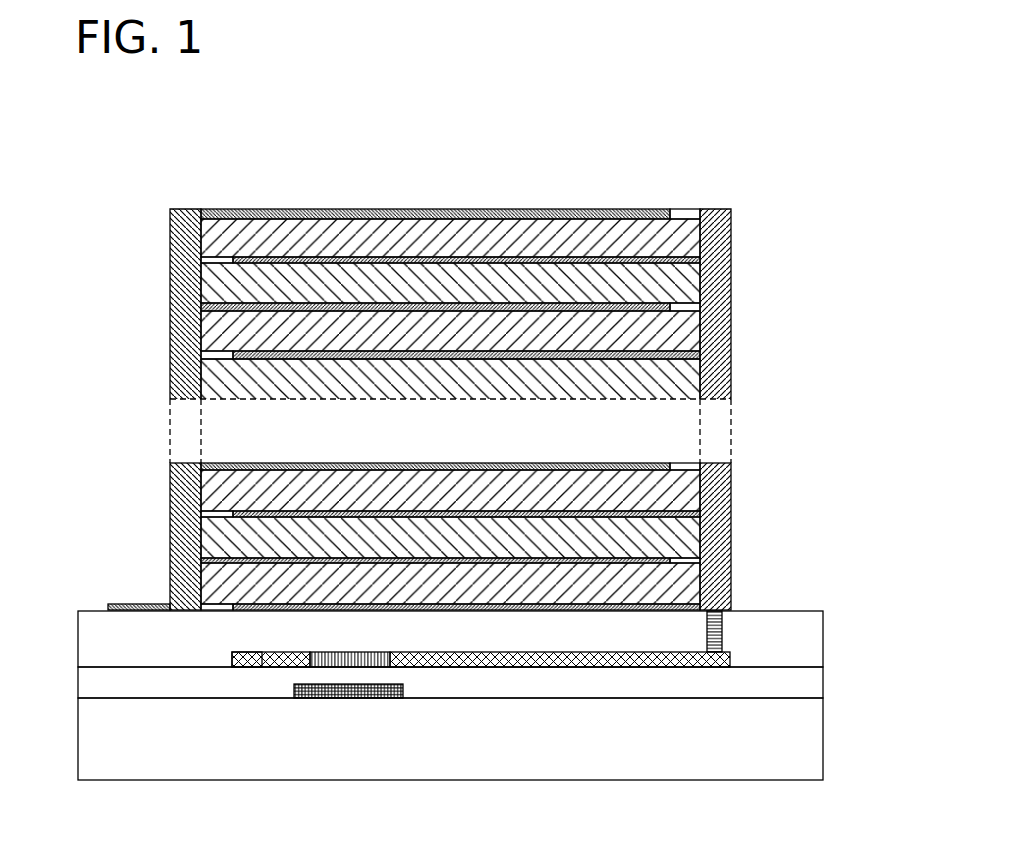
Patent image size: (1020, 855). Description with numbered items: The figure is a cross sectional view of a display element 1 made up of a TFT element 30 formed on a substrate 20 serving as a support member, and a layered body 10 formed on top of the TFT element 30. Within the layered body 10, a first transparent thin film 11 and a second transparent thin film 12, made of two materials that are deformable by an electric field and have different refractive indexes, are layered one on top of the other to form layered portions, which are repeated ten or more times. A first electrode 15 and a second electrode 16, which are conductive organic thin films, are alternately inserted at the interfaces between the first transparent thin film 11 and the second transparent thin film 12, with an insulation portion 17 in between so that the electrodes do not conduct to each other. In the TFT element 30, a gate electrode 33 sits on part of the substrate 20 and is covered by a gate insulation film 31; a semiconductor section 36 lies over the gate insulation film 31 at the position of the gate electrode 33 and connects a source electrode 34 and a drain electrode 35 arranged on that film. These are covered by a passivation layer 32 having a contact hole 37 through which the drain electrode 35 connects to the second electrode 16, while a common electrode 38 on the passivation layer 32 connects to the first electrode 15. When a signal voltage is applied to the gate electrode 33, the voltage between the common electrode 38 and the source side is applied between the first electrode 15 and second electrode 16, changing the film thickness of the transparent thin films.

The display element 1 is at (729, 190).
The layered body 10 is at (808, 210).
The first transparent thin film 11 is at (682, 585).
The second transparent thin film 12 is at (676, 538).
The first electrode 15 is at (170, 308).
The second electrode 16 is at (731, 295).
The insulation portion 17 is at (213, 603).
The substrate 20 is at (823, 742).
The TFT element 30 is at (860, 612).
The gate insulation film 31 is at (95, 684).
The passivation layer 32 is at (97, 643).
The gate electrode 33 is at (348, 690).
The source electrode 34 is at (263, 655).
The drain electrode 35 is at (422, 652).
The semiconductor section 36 is at (348, 652).
The contact hole 37 is at (722, 635).
The common electrode 38 is at (108, 605).